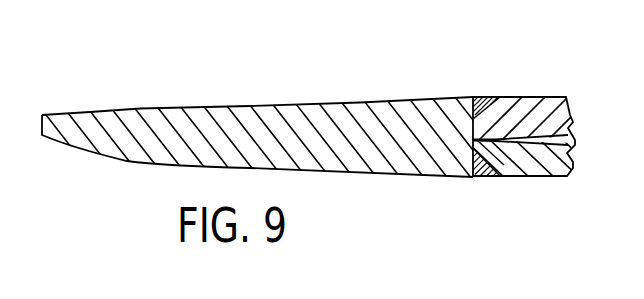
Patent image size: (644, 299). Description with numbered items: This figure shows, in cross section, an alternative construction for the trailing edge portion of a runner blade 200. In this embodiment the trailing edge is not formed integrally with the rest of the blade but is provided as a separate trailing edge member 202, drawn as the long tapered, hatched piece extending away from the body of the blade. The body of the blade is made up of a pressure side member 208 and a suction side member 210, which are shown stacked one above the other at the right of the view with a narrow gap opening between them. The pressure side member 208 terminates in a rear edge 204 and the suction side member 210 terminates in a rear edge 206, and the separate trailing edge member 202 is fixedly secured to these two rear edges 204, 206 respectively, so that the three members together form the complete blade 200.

The blade 200 is at (460, 83).
The trailing edge member 202 is at (249, 107).
The rear edge of pressure side member 204 is at (490, 178).
The rear edge of suction side member 206 is at (485, 99).
The pressure side member 208 is at (563, 178).
The suction side member 210 is at (560, 99).